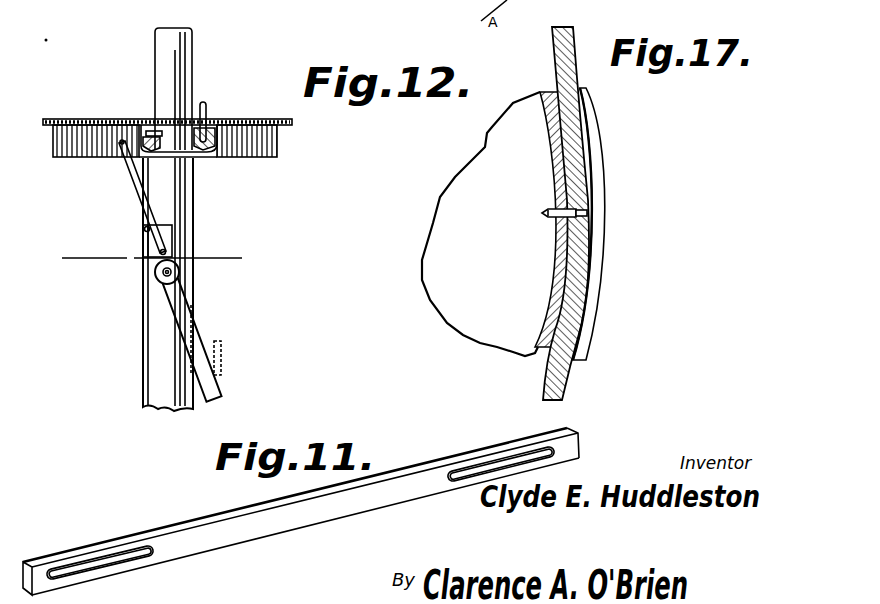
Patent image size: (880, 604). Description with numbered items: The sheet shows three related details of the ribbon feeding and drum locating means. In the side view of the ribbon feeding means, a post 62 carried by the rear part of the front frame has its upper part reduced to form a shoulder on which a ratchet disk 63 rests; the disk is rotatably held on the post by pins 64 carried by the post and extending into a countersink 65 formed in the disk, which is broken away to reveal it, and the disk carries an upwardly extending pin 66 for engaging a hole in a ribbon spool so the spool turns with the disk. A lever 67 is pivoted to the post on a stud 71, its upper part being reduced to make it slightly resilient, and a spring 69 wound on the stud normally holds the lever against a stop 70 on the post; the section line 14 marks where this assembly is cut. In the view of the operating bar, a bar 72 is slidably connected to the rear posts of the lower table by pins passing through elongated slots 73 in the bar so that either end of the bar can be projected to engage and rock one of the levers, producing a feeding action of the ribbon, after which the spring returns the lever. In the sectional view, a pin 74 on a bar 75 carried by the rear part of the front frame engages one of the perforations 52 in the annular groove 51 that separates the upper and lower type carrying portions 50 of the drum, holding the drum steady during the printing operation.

In FIG. 12, the section line 14 is at (153, 259).
In FIG. 17, the type carrying portions 50 is at (606, 224).
In FIG. 17, the annular groove 51 is at (553, 160).
In FIG. 17, the perforations 52 is at (556, 207).
In FIG. 12, the post 62 is at (150, 363).
In FIG. 12, the ratchet disk 63 is at (290, 103).
In FIG. 12, the pins 64 is at (152, 130).
In FIG. 12, the countersink 65 is at (203, 102).
In FIG. 12, the pin 66 is at (208, 112).
In FIG. 12, the lever 67 is at (136, 192).
In FIG. 12, the spring 69 is at (172, 238).
In FIG. 12, the stop 70 is at (144, 231).
In FIG. 12, the stud 71 is at (163, 277).
In FIG. 12, the bar 72 is at (222, 346).
In FIG. 11, the bar 72 is at (293, 524).
In FIG. 11, the elongated slots 73 is at (78, 566).
In FIG. 17, the pin 74 is at (553, 218).
In FIG. 17, the bar 75 is at (577, 70).